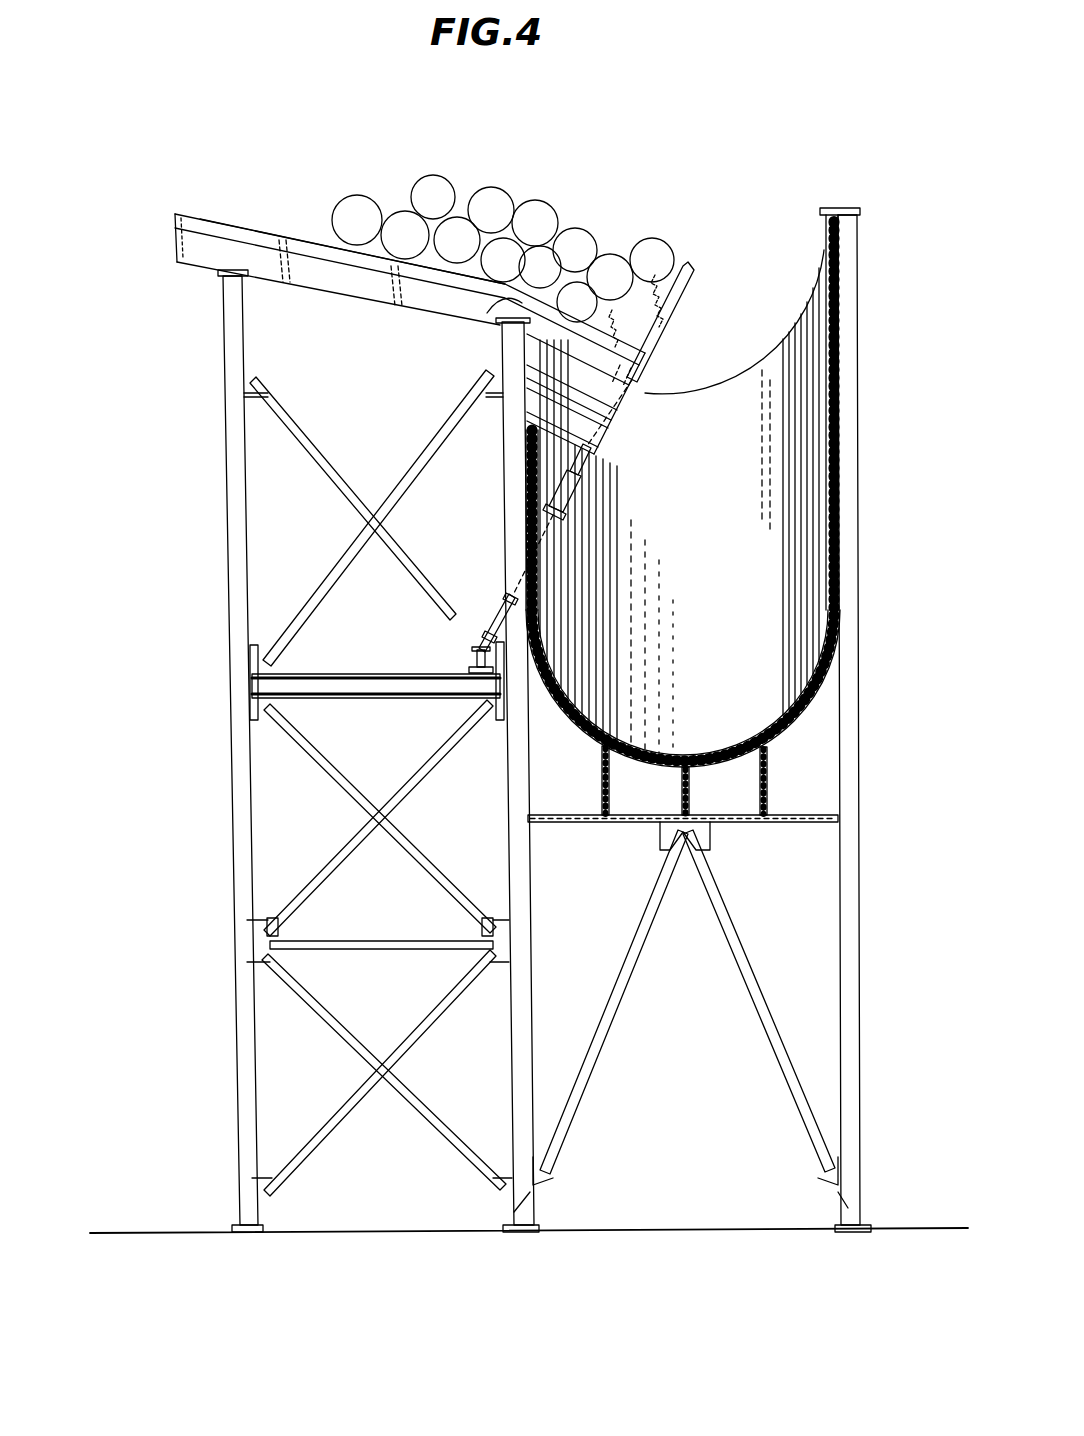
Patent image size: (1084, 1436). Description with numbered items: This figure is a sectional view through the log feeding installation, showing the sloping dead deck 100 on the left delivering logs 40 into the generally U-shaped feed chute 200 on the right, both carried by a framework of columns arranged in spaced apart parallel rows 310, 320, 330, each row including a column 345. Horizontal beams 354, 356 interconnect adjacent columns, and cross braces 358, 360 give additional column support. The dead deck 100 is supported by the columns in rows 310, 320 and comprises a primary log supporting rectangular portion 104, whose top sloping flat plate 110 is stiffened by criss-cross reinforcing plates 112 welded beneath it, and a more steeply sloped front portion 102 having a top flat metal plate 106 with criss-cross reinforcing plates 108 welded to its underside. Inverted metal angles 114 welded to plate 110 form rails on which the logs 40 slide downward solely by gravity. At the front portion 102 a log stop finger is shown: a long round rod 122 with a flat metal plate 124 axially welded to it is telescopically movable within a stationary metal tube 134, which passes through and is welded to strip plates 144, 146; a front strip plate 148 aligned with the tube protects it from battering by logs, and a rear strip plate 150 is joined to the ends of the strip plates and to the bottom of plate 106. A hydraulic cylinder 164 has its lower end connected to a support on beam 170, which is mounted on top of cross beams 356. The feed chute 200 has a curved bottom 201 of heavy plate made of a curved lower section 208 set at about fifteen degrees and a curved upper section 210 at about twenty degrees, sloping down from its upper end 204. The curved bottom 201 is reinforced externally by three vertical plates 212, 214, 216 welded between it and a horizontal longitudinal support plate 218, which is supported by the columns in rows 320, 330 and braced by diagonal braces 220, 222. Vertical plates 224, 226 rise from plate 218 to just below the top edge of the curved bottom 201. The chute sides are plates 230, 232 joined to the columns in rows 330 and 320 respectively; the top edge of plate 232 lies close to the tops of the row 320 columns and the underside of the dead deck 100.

The logs 40 is at (440, 190).
The dead deck 100 is at (388, 185).
The front portion 102 is at (573, 235).
The primary log supporting rectangular portion 104 is at (268, 226).
The top flat metal plate 106 is at (528, 332).
The criss-cross reinforcing plates 108 is at (493, 314).
The top sloping flat plate 110 is at (307, 242).
The criss-cross reinforcing plates 112 is at (292, 290).
The inverted metal angles 114 is at (205, 214).
The long round rod 122 is at (660, 313).
The flat metal plate 124 is at (628, 329).
The stationary metal tube 134 is at (565, 490).
The strip plate 144 is at (571, 386).
The strip plate 146 is at (578, 424).
The front strip plate 148 is at (592, 468).
The rear strip plate 150 is at (542, 397).
The hydraulic cylinder 164 is at (493, 615).
The beam 170 is at (470, 660).
The feed chute 200 is at (746, 324).
The curved bottom 201 is at (645, 716).
The upper end 204 is at (708, 382).
The curved lower section 208 is at (730, 708).
The curved upper section 210 is at (770, 418).
The vertical plate 212 is at (602, 768).
The vertical plate 214 is at (683, 790).
The vertical plate 216 is at (767, 765).
The horizontal longitudinal support plate 218 is at (748, 822).
The diagonal brace 220 is at (598, 1040).
The diagonal brace 222 is at (787, 1067).
The vertical plate 224 is at (835, 680).
The vertical plate 226 is at (526, 708).
The side plate 230 is at (830, 398).
The side plate 232 is at (540, 447).
The row of columns 310 is at (225, 1074).
The row of columns 320 is at (538, 979).
The row of columns 330 is at (872, 936).
The column 345 is at (245, 873).
The horizontal beam 354 is at (355, 947).
The cross beam 356 is at (352, 687).
The cross brace 358 is at (332, 580).
The cross brace 360 is at (320, 453).